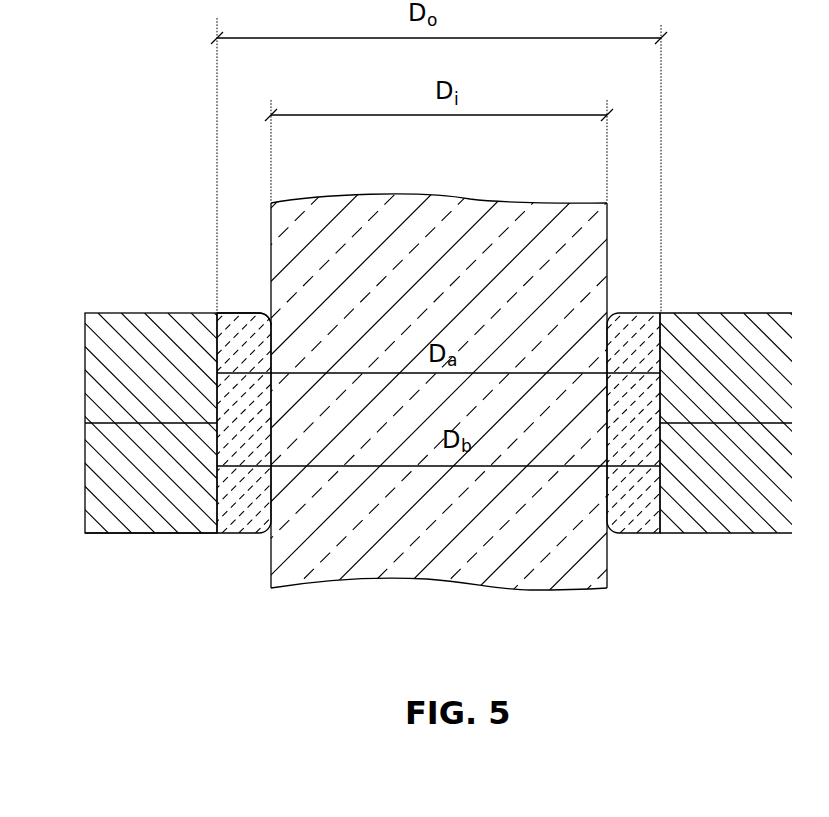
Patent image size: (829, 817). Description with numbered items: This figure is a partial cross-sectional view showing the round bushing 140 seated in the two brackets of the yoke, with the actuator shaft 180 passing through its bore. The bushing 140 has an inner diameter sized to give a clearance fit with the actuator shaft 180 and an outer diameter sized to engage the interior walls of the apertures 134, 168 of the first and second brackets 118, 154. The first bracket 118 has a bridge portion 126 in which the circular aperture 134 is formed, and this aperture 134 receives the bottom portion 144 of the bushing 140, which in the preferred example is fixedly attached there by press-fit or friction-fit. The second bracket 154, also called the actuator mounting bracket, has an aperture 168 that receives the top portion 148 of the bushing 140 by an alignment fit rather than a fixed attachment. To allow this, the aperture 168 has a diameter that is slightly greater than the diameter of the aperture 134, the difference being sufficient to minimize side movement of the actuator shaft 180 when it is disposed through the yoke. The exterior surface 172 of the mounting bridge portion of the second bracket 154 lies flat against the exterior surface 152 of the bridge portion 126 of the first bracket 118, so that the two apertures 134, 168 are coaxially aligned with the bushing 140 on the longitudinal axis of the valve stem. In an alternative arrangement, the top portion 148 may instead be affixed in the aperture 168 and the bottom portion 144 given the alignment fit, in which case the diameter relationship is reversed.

The first bracket 118 is at (128, 507).
The bridge portion 126 is at (163, 515).
The aperture 134 is at (205, 512).
The bushing 140 is at (640, 347).
The first portion of the bushing 144 is at (699, 424).
The second portion of the bushing 148 is at (699, 314).
The exterior surface of the bridge portion 152 is at (120, 418).
The second bracket 154 is at (105, 352).
The aperture 168 is at (196, 329).
The exterior surface of the mounting bridge portion 172 is at (100, 424).
The actuator shaft 180 is at (593, 467).